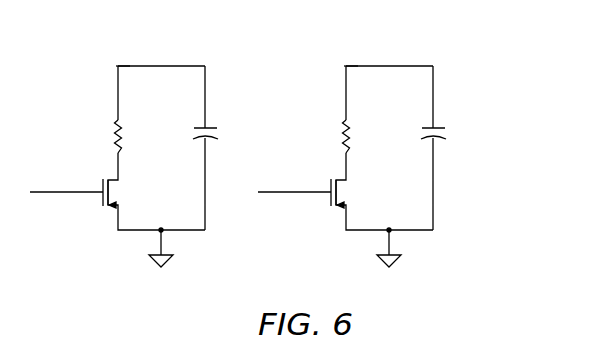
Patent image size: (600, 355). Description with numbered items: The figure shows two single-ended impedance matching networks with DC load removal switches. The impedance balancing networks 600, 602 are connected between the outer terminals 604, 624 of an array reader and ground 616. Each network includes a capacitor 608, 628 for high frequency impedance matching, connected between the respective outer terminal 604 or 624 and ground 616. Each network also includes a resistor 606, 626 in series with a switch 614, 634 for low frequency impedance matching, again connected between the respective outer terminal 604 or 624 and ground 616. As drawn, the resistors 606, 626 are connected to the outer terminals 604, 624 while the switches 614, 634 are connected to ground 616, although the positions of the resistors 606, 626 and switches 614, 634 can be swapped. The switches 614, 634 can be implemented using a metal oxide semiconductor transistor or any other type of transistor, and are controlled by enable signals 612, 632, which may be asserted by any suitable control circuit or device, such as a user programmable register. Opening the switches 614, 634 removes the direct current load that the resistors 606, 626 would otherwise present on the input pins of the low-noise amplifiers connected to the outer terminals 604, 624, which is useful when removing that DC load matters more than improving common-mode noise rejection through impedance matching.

The impedance balancing network 600 is at (233, 56).
The impedance balancing network 602 is at (428, 123).
The terminal HRPA 604 is at (124, 65).
The resistor 606 is at (116, 119).
The capacitor 608 is at (208, 127).
The enable signal 612 is at (43, 194).
The switch 614 is at (102, 197).
The ground 616 is at (156, 263).
The terminal HRNC 624 is at (337, 42).
The resistor 626 is at (325, 118).
The capacitor 628 is at (448, 111).
The enable signal 632 is at (279, 205).
The switch 634 is at (309, 208).